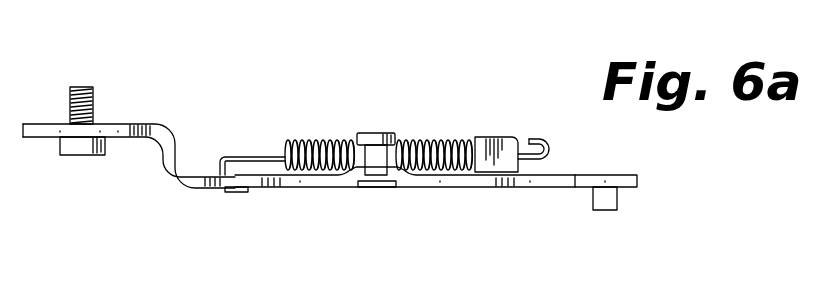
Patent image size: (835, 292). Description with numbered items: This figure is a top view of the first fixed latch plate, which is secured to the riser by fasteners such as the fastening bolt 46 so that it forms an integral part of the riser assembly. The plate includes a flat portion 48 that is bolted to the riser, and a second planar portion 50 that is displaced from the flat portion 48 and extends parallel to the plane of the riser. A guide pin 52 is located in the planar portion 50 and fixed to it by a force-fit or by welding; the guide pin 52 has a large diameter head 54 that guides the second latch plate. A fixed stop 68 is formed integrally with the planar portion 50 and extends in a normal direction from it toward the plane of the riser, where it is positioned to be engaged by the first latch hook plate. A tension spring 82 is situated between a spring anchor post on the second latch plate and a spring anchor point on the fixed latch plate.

The fastening bolt 46 is at (83, 87).
The flat portion 48 is at (133, 125).
The planar portion 50 is at (433, 187).
The guide pin 52 is at (370, 157).
The large diameter head 54 is at (376, 140).
The fixed stop 68 is at (478, 140).
The tension spring 82 is at (308, 140).